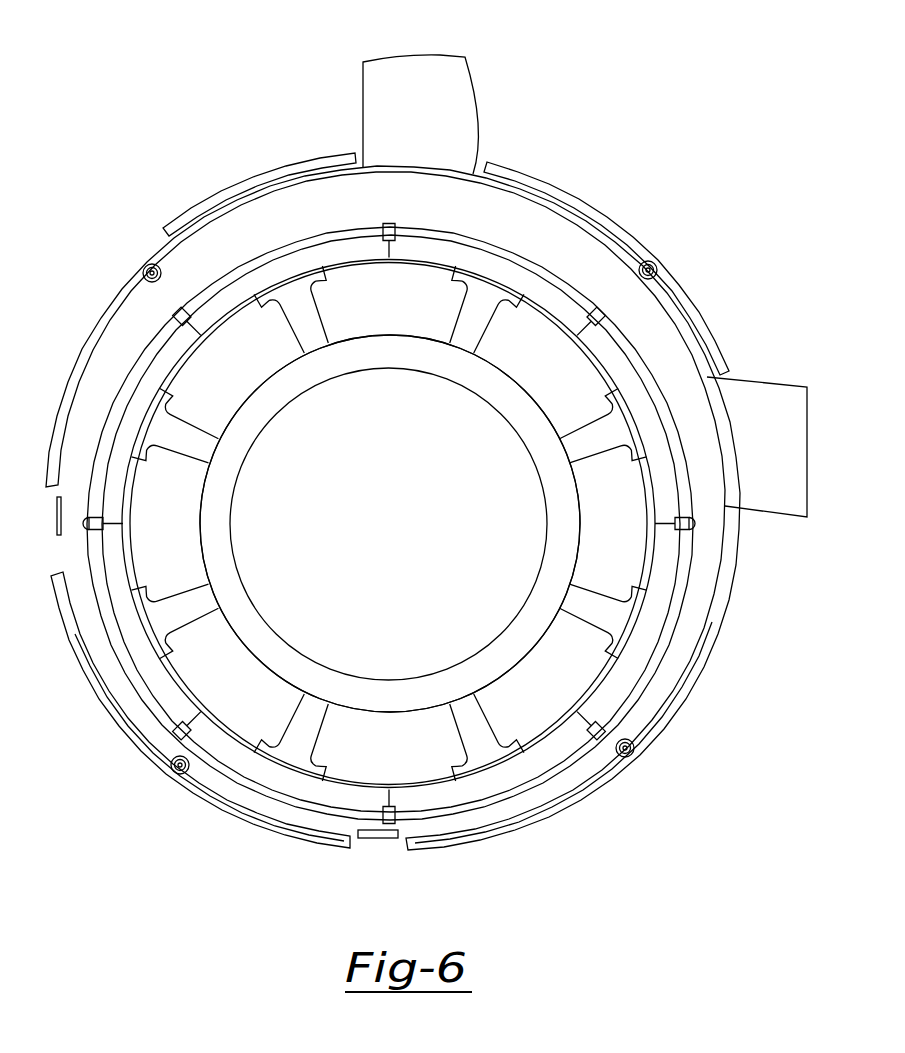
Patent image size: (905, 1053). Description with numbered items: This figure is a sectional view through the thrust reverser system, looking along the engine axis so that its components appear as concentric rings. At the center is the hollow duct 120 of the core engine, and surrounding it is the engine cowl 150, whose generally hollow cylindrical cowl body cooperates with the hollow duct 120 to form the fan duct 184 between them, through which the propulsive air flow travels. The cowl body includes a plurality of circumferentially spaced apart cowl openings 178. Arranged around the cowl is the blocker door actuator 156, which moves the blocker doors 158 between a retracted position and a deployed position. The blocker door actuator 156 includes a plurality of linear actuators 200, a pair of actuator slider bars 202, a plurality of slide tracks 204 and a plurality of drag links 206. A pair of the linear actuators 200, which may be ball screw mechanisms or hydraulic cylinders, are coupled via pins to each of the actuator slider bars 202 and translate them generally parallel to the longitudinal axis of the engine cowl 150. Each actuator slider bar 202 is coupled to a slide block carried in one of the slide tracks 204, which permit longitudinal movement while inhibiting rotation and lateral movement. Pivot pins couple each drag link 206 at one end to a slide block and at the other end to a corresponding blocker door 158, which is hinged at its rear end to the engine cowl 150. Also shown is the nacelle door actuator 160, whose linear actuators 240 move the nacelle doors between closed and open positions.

The hollow duct 120 is at (418, 338).
The engine cowl 150 is at (295, 288).
The blocker door actuator 156 is at (718, 590).
The blocker doors 158 is at (598, 523).
The nacelle door actuator 160 is at (154, 245).
The cowl openings 178 is at (410, 250).
The fan duct 184 is at (203, 450).
The linear actuators 200 is at (598, 305).
The actuator slider bars 202 is at (663, 417).
The slide tracks 204 is at (573, 717).
The drag links 206 is at (587, 735).
The linear actuators 240 is at (148, 282).